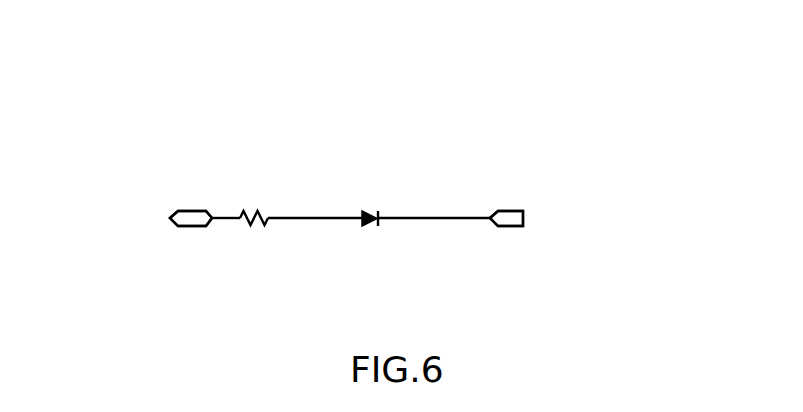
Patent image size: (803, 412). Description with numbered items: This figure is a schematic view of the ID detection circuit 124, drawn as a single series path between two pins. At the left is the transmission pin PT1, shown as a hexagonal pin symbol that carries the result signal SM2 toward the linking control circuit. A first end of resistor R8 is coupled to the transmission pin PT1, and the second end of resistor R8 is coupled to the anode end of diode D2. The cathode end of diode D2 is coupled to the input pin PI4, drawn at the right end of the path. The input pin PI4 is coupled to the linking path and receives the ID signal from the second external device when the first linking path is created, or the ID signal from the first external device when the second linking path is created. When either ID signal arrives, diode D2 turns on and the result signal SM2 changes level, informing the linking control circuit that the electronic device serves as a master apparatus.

The ID detection circuit 124 is at (139, 113).
The result signal SM2 is at (171, 218).
The transmission pin PT1 is at (190, 213).
The resistor R8 is at (254, 206).
The diode D2 is at (370, 207).
The input pin PI4 is at (514, 213).